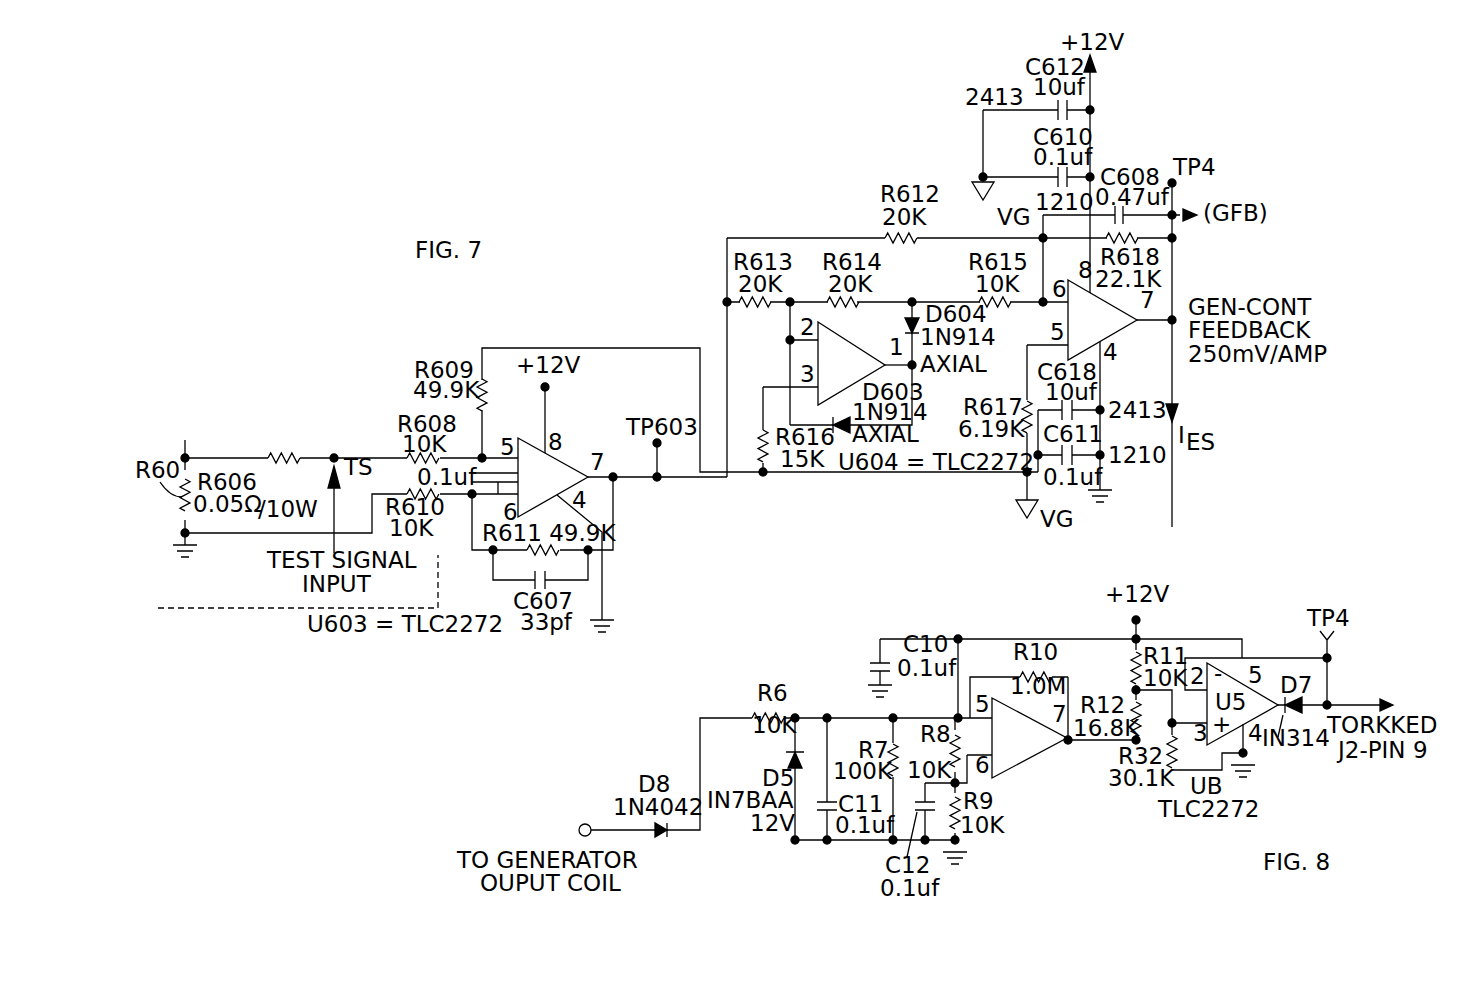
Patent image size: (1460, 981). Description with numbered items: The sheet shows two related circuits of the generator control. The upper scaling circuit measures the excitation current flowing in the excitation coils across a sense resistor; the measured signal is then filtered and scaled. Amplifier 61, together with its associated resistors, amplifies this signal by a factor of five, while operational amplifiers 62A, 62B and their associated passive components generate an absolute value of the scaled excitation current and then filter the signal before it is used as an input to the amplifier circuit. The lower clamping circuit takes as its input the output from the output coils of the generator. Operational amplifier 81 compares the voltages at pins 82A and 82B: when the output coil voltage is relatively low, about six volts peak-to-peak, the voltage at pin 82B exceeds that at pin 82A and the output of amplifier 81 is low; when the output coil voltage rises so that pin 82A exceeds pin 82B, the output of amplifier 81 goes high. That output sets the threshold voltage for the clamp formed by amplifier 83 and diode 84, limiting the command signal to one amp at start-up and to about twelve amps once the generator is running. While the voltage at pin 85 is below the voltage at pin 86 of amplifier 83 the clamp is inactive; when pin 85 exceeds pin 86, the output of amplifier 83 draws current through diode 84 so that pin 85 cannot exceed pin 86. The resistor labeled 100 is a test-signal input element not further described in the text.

In FIG. 7, the amplifier 61 is at (558, 452).
In FIG. 7, the operational amplifier 62A is at (840, 336).
In FIG. 7, the operational amplifier 62B is at (1112, 342).
In FIG. 8, the operational amplifier 81 is at (1030, 762).
In FIG. 8, the pin 82A is at (968, 715).
In FIG. 8, the pin 82B is at (970, 780).
In FIG. 8, the amplifier 83 is at (1213, 660).
In FIG. 8, the diode 84 is at (788, 758).
In FIG. 8, the pin 85 is at (1333, 662).
In FIG. 8, the pin 86 is at (1180, 728).
In FIG. 7, the resistor RT 100 is at (291, 454).